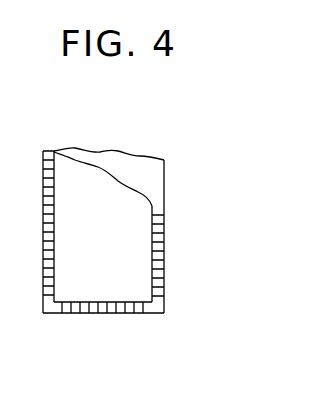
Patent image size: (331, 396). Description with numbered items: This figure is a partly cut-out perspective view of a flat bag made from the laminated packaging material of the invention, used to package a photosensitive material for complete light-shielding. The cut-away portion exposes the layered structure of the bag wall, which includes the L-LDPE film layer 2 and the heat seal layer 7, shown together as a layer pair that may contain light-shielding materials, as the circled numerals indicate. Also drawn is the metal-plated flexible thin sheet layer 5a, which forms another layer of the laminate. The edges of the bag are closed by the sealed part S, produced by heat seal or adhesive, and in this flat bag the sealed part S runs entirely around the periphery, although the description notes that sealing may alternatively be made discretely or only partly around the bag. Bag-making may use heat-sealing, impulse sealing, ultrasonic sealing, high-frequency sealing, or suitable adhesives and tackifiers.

The L-LDPE film layer 2 is at (152, 189).
The heat seal layer 7 is at (158, 193).
The metal-plated flexible thin sheet layer 5a is at (145, 283).
The sealed part S is at (110, 313).